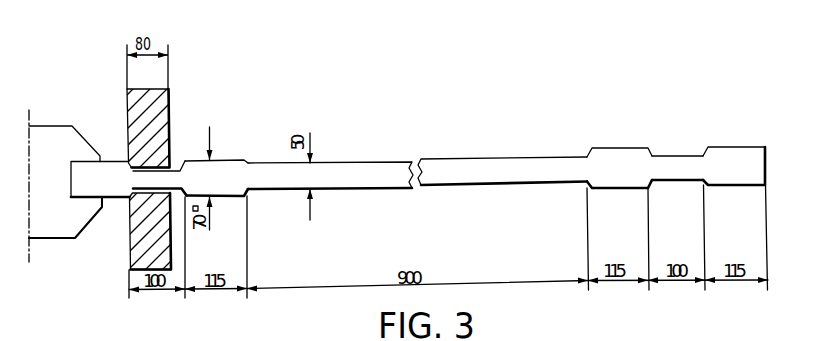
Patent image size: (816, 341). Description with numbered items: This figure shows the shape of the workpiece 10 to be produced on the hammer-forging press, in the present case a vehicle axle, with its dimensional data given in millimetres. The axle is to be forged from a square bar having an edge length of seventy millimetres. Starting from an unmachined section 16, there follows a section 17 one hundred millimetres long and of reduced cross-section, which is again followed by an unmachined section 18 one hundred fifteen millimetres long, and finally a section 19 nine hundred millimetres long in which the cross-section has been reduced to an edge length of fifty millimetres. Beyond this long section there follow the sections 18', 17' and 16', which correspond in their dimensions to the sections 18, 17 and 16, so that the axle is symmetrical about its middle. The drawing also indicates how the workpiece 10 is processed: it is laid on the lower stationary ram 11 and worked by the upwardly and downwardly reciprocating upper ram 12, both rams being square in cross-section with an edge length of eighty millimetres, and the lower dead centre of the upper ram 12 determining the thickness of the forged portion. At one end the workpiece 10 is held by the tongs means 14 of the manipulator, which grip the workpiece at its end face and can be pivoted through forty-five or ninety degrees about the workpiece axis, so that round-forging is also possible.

The workpiece 10 is at (418, 149).
The lower stationary ram 11 is at (142, 243).
The upper ram 12 is at (164, 105).
The tongs means 14 is at (53, 232).
The unmachined section 16 is at (100, 149).
The section of reduced cross-section 17 is at (162, 156).
The unmachined section 18 is at (216, 156).
The reduced section 19 is at (385, 168).
The unmachined section 18' is at (619, 147).
The section of reduced cross-section 17' is at (677, 145).
The unmachined section 16' is at (734, 144).